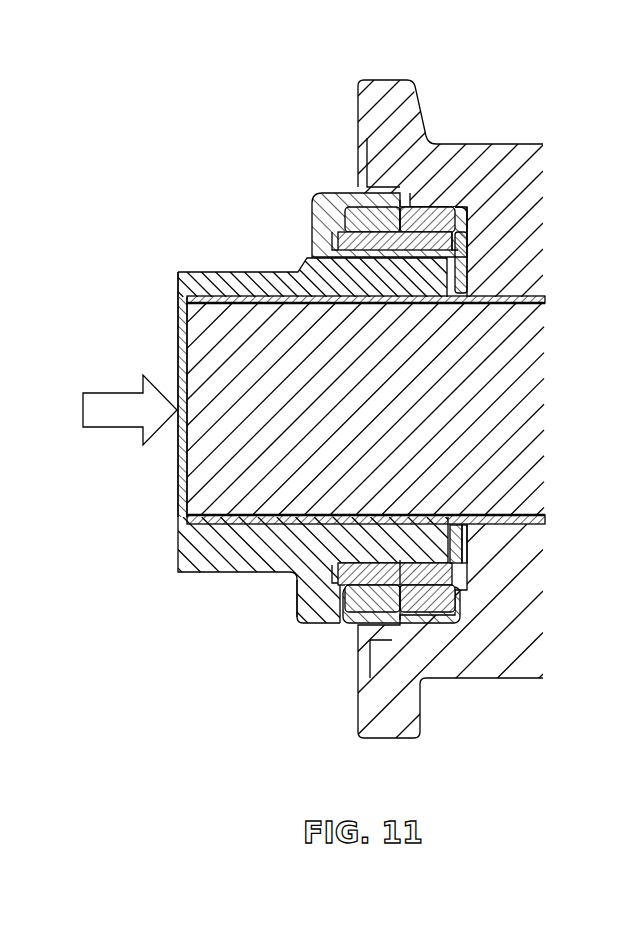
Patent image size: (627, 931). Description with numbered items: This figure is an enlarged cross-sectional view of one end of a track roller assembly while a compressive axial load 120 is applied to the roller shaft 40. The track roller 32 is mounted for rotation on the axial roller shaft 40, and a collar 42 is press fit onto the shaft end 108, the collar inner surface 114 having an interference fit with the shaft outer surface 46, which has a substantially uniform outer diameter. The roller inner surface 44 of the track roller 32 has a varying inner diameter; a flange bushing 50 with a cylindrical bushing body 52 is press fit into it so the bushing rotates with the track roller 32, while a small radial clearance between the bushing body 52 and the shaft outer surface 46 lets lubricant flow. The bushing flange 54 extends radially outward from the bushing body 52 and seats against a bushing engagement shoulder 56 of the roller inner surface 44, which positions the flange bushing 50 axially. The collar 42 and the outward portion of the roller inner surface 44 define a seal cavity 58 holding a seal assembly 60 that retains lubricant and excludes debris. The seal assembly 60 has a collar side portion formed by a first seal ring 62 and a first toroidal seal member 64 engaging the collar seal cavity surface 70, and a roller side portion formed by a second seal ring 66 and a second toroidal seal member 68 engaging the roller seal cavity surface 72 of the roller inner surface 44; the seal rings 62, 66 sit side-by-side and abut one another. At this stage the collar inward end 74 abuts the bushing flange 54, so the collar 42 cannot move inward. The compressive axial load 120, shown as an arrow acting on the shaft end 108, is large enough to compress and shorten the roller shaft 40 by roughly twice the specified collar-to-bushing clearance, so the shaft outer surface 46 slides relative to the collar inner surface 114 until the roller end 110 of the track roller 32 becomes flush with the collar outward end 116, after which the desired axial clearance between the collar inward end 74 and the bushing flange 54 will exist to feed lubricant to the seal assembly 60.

The track roller 32 is at (495, 162).
The roller shaft 40 is at (205, 487).
The collar 42 is at (178, 271).
The roller inner surface 44 is at (544, 305).
The shaft outer surface 46 is at (265, 297).
The flange bushing 50 is at (475, 535).
The bushing body 52 is at (475, 530).
The bushing flange 54 is at (463, 562).
The bushing engagement shoulder 56 is at (467, 232).
The seal cavity 58 is at (340, 247).
The seal assembly 60 is at (402, 212).
The first seal ring 62 is at (298, 580).
The first toroidal seal member 64 is at (333, 623).
The second seal ring 66 is at (465, 595).
The second toroidal seal member 68 is at (437, 610).
The collar seal cavity surface 70 is at (312, 207).
The roller seal cavity surface 72 is at (360, 178).
The collar inward end 74 is at (467, 272).
The shaft end 108 is at (178, 356).
The roller end 110 is at (357, 105).
The collar inner surface 114 is at (180, 318).
The collar outward end 116 is at (178, 291).
The compressive axial load 120 is at (117, 403).